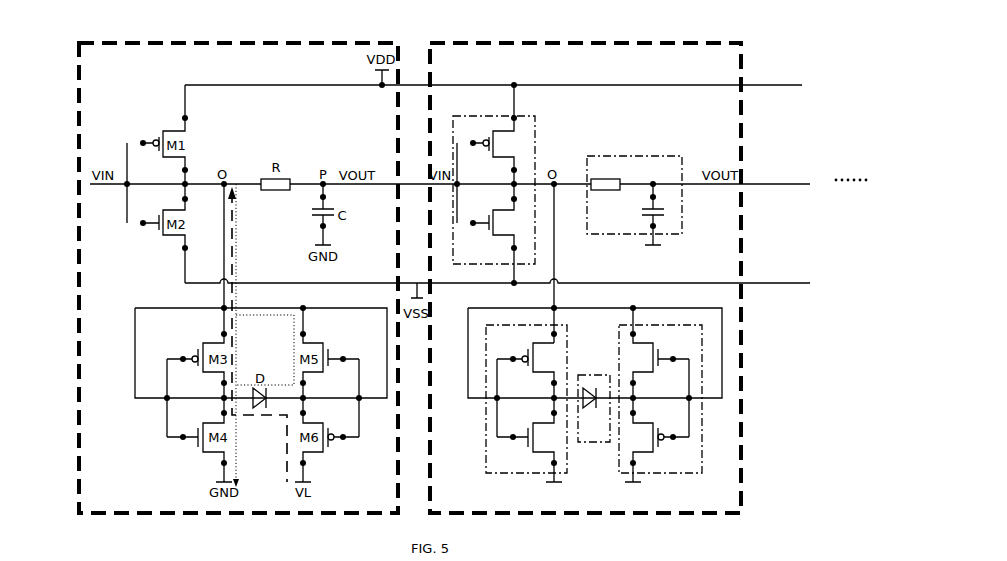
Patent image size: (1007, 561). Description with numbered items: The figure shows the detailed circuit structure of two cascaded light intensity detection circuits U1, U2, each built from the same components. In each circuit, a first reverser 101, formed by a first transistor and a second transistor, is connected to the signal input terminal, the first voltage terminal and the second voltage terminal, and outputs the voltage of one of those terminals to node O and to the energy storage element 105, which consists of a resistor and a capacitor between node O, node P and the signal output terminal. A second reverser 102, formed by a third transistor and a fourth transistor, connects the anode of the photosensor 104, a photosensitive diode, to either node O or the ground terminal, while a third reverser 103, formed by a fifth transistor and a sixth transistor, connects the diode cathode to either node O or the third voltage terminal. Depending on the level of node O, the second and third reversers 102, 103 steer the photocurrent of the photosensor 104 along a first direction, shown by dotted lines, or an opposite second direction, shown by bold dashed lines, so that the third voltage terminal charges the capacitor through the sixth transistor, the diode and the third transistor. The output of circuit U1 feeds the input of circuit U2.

The first light intensity detection circuit U1 is at (93, 96).
The second light intensity detection circuit U2 is at (712, 67).
The first reverser 101 is at (534, 140).
The second reverser 102 is at (560, 453).
The third reverser 103 is at (693, 453).
The photosensor 104 is at (587, 376).
The energy storage element 105 is at (628, 162).